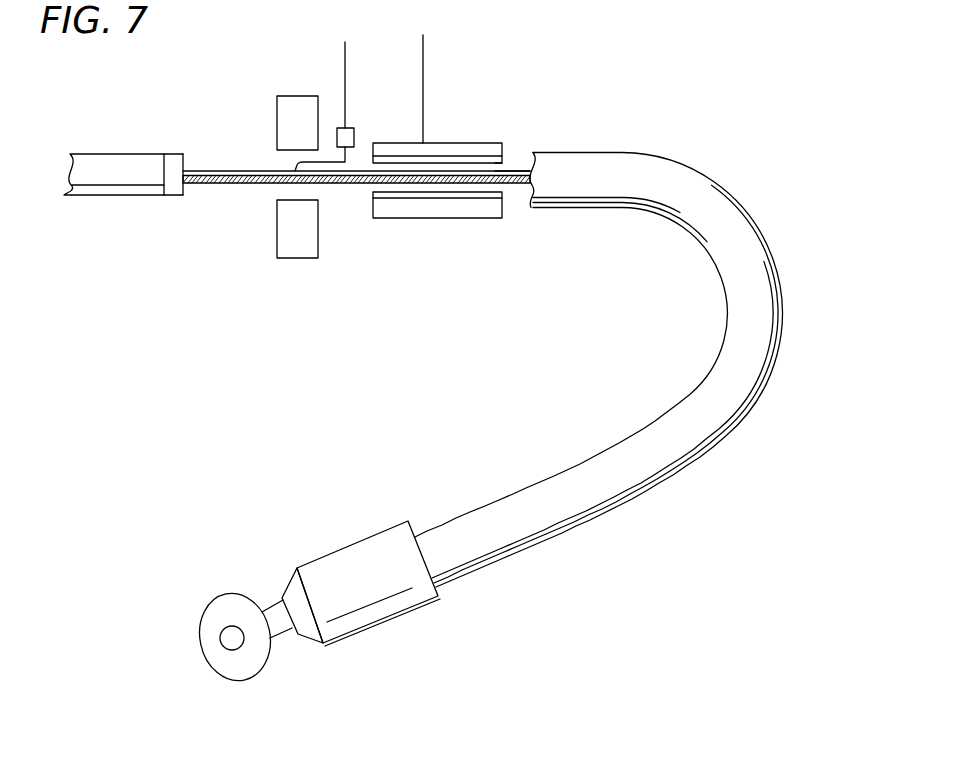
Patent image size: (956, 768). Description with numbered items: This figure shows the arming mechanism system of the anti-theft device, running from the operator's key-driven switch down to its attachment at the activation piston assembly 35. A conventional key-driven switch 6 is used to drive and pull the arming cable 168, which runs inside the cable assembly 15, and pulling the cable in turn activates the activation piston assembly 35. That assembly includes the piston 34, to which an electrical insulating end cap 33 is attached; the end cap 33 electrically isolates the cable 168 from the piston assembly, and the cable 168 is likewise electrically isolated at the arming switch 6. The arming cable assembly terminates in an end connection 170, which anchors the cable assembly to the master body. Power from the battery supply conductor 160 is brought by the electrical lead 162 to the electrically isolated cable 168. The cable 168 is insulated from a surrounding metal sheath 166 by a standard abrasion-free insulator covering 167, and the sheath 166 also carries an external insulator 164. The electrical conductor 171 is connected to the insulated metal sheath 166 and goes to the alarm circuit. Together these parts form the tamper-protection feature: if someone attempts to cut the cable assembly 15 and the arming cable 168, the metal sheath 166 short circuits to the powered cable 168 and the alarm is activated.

The piston 34 is at (102, 153).
The electrical insulating end cap 33 is at (174, 153).
The activation piston assembly 35 is at (133, 196).
The activating cable 168 is at (250, 170).
The end connection 170 is at (277, 96).
The conductor leg 160 is at (346, 98).
The connect point 162 is at (354, 133).
The electrical conductor 171 is at (424, 73).
The metal sheath 166 is at (455, 224).
The external insulator 164 is at (493, 219).
The insulator covering 167 is at (502, 163).
The cable assembly 15 is at (673, 160).
The key-driven switch 6 is at (347, 546).